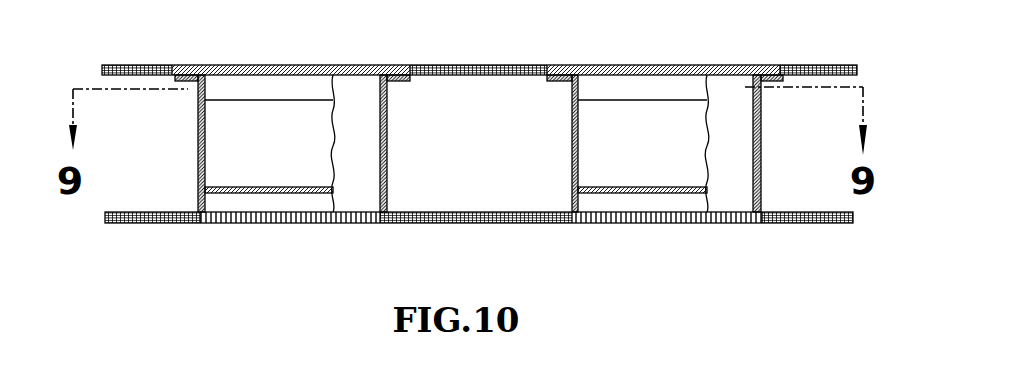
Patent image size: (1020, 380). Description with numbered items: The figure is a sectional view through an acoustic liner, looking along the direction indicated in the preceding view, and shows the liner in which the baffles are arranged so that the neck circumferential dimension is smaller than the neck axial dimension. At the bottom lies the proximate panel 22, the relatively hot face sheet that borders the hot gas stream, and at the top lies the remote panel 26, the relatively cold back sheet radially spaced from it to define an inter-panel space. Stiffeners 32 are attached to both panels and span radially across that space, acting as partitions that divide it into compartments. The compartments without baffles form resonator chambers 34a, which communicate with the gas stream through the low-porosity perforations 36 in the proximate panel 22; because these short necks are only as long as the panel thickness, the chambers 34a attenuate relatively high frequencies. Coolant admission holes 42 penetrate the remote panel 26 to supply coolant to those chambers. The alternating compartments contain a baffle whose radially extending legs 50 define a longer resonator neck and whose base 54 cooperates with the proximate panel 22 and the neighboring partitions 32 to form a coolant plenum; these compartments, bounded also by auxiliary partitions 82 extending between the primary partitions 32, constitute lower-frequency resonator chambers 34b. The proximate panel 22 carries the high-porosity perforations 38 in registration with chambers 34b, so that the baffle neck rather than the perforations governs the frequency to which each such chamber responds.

The proximate panel 22 is at (481, 247).
The remote panel 26 is at (497, 47).
The stiffener 32 is at (198, 163).
The resonator chamber 34a is at (136, 146).
The resonator chamber 34b is at (265, 155).
The perforations 36 is at (141, 226).
The perforations 38 is at (668, 224).
The coolant admission holes 42 is at (131, 66).
The radially extending leg 50 is at (243, 122).
The baffle base 54 is at (288, 193).
The auxiliary partition 82 is at (371, 151).